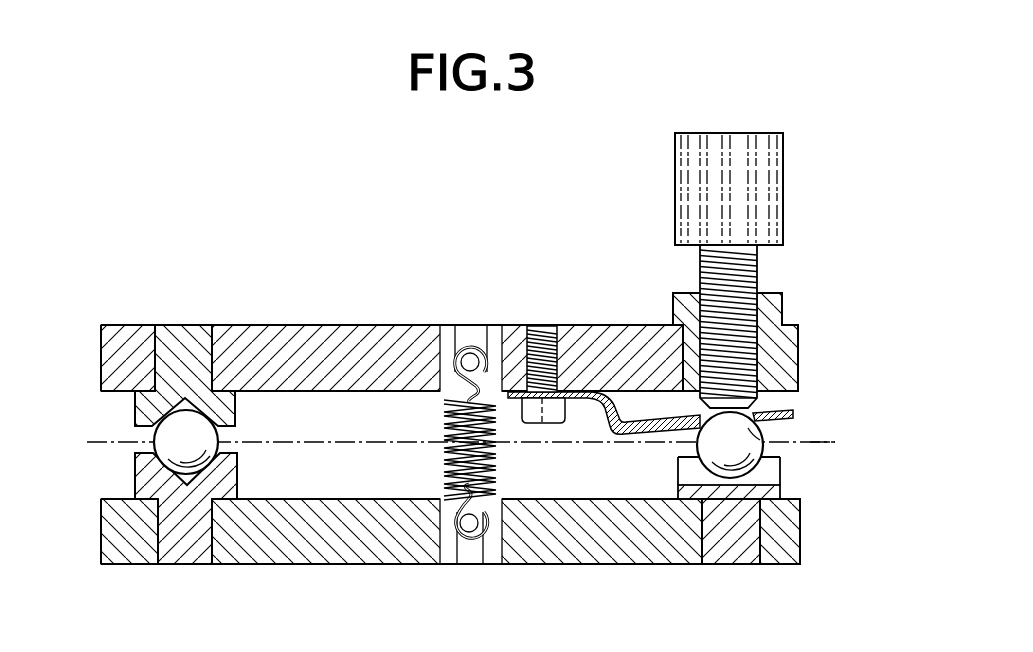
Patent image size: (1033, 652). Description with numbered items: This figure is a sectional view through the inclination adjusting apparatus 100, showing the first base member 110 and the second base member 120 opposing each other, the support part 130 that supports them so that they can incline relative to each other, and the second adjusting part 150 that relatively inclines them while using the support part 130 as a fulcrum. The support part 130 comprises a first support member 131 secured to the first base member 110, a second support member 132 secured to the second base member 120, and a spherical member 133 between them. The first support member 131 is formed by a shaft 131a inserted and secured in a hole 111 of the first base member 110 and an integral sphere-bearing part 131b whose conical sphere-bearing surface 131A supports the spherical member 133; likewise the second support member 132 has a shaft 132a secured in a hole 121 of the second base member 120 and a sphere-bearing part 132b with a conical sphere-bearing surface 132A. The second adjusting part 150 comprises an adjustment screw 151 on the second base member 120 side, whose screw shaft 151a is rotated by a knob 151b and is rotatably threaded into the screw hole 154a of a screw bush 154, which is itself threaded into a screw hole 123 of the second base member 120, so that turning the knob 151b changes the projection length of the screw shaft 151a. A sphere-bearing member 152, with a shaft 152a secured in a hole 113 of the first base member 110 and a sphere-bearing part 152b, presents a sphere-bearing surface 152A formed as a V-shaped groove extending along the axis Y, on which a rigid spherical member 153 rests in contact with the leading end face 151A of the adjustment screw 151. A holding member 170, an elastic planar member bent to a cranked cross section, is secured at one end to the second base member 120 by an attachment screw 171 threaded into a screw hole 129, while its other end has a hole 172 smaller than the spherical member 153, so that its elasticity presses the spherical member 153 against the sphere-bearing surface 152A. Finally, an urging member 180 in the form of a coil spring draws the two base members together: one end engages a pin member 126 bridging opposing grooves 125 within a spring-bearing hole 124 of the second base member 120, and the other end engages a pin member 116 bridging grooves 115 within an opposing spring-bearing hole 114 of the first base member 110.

The inclination adjusting apparatus 100 is at (240, 252).
The first base member 110 is at (350, 567).
The hole 111 is at (204, 556).
The hole 113 is at (752, 555).
The spring-bearing hole 114 is at (445, 566).
The grooves 115 is at (478, 552).
The pin member 116 is at (468, 548).
The second base member 120 is at (378, 322).
The hole 121 is at (170, 324).
The screw hole 123 is at (690, 332).
The spring-bearing hole 124 is at (496, 345).
The grooves 125 is at (462, 330).
The pin member 126 is at (471, 352).
The screw hole 129 is at (547, 325).
The support part 130 is at (103, 412).
The first support member 131 is at (188, 569).
The shaft 131a is at (172, 553).
The sphere-bearing part 131b is at (140, 482).
The sphere-bearing surface 131A is at (150, 452).
The second support member 132 is at (187, 323).
The shaft 132a is at (200, 326).
The sphere-bearing part 132b is at (238, 412).
The sphere-bearing surface 132A is at (150, 436).
The spherical member 133 is at (220, 436).
The second adjusting part 150 is at (827, 400).
The adjustment screw 151 is at (806, 190).
The screw shaft 151a is at (700, 262).
The knob 151b is at (690, 160).
The leading end face 151A is at (700, 408).
The sphere-bearing member 152 is at (735, 567).
The shaft 152a is at (700, 548).
The sphere-bearing part 152b is at (680, 491).
The sphere-bearing surface 152A is at (680, 466).
The spherical member 153 is at (765, 465).
The screw bush 154 is at (782, 298).
The screw hole 154a is at (757, 275).
The holding member 170 is at (800, 415).
The attachment screw 171 is at (545, 425).
The hole 172 is at (760, 437).
The urging member 180 is at (437, 461).
The axis Y is at (838, 446).